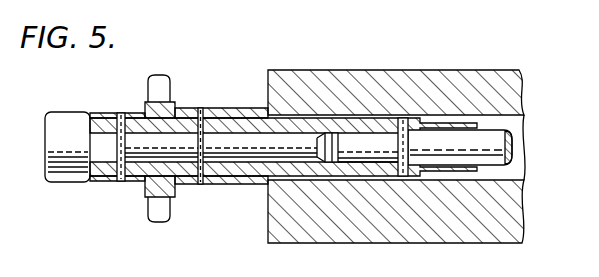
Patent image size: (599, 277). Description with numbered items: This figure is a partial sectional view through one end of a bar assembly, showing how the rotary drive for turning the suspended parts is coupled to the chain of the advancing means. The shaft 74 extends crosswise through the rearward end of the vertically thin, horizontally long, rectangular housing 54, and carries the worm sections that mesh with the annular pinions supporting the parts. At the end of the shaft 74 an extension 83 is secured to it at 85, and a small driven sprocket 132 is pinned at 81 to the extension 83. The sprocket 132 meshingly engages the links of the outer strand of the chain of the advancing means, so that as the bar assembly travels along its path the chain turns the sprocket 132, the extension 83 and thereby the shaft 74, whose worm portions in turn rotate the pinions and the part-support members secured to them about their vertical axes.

The driven sprocket 132 is at (167, 83).
The pin 81 is at (200, 108).
The housing 54 is at (368, 70).
The extension 83 is at (252, 164).
The shaft 74 is at (500, 143).
The securing connection 85 is at (405, 180).